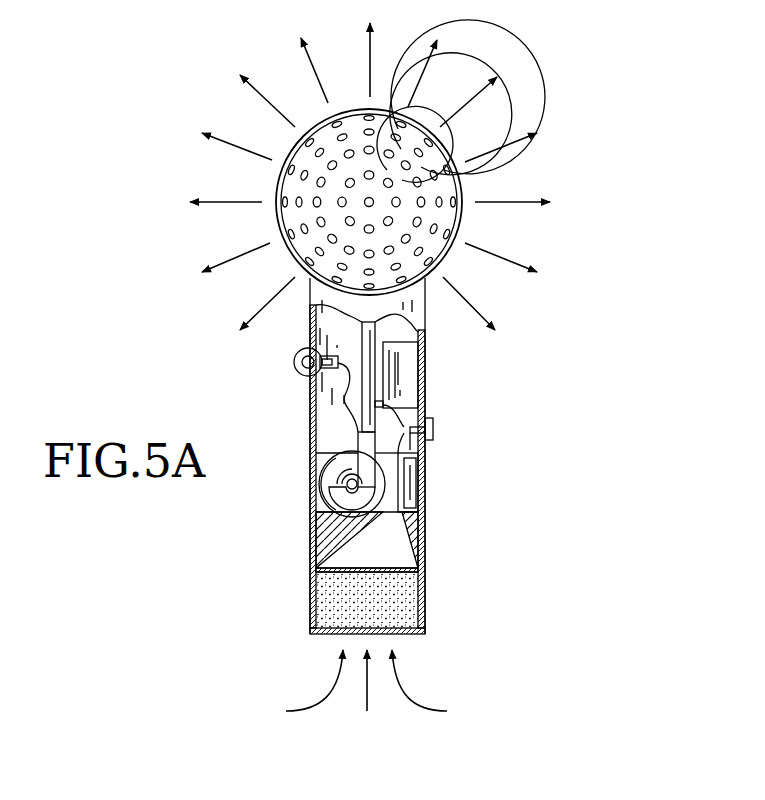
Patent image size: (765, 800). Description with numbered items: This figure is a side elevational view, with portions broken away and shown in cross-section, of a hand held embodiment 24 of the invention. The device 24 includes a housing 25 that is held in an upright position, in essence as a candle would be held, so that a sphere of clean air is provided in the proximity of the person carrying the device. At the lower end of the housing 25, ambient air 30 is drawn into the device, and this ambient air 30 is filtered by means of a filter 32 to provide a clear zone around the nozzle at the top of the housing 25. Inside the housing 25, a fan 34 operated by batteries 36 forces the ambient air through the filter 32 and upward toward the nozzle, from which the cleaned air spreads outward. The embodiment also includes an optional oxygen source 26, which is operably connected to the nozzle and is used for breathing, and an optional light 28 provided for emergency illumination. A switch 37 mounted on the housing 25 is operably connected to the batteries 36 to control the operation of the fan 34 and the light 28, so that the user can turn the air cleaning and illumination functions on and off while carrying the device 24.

The hand held embodiment 24 is at (547, 447).
The housing 25 is at (425, 312).
The oxygen source 26 is at (407, 375).
The light 28 is at (292, 373).
The ambient air 30 is at (397, 670).
The filter 32 is at (408, 612).
The fan 34 is at (332, 493).
The batteries 36 is at (413, 473).
The switch 37 is at (433, 425).